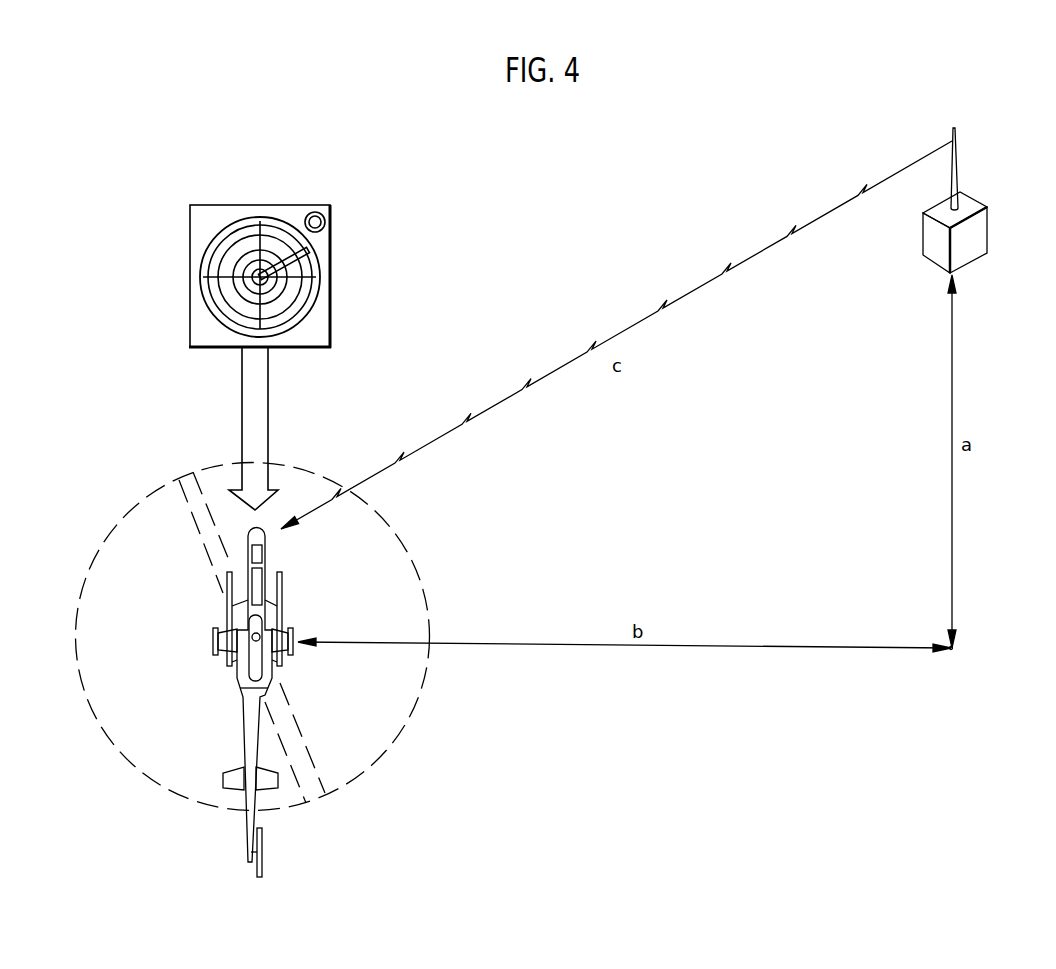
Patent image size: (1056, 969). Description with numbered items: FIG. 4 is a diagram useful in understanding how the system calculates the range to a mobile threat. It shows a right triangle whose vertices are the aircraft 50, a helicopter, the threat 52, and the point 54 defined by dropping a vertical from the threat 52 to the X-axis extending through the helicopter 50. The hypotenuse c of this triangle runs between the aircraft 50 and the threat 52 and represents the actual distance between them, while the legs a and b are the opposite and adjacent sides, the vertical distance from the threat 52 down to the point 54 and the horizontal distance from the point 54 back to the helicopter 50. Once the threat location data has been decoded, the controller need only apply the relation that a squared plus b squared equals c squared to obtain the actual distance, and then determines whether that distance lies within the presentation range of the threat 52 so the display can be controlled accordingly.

The aircraft 50 is at (237, 681).
The threat 52 is at (987, 232).
The point 54 is at (951, 650).